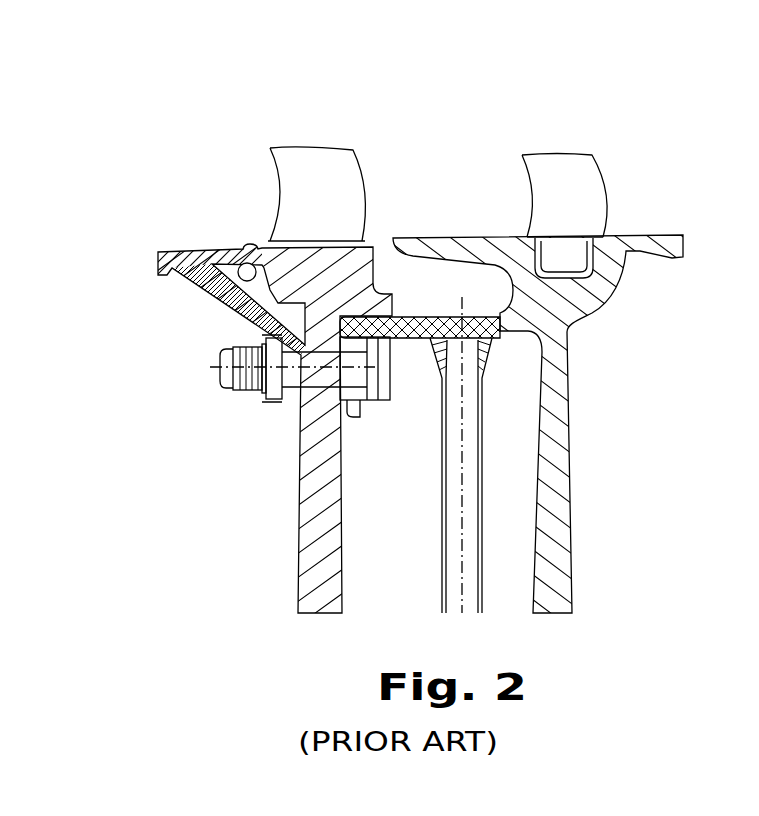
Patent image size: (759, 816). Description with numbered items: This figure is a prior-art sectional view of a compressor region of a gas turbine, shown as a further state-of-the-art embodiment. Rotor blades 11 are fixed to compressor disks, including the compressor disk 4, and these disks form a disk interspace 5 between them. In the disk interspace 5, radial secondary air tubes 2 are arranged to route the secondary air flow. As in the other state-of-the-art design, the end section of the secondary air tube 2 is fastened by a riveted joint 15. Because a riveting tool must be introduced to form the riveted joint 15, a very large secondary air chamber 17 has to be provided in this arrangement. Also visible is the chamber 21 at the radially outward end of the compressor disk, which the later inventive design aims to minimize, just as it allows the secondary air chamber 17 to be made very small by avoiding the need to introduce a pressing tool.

The secondary air tube 2 is at (481, 503).
The compressor disk 4 is at (553, 410).
The disk interspace 5 is at (520, 378).
The rotor blade 11 is at (307, 200).
The riveted joint 15 is at (425, 329).
The secondary air chamber 17 is at (423, 301).
The chamber 21 is at (250, 282).